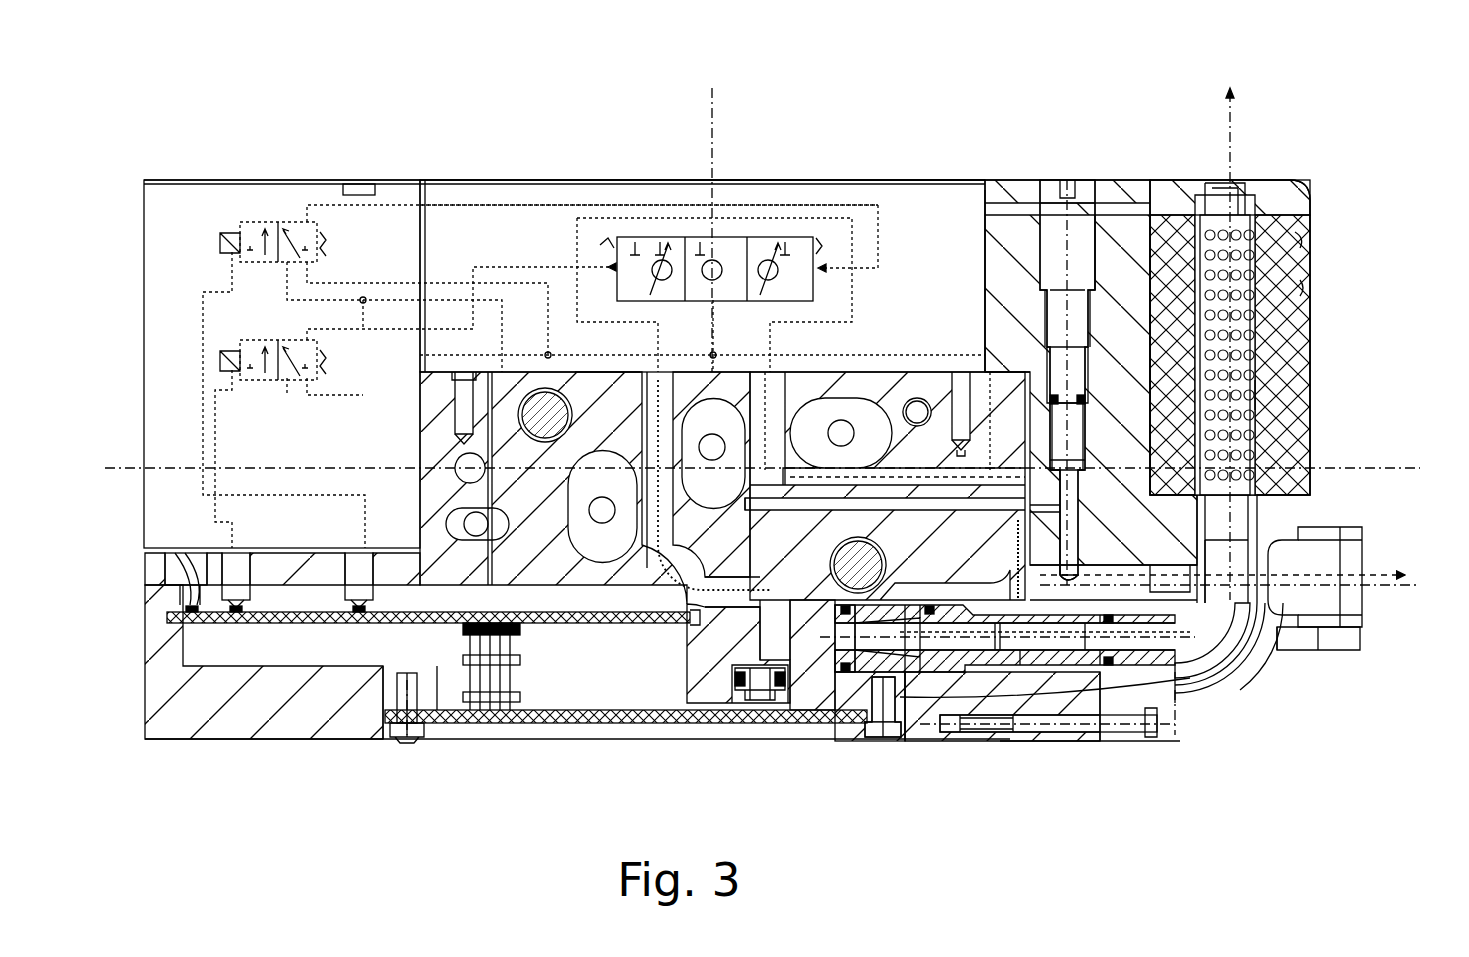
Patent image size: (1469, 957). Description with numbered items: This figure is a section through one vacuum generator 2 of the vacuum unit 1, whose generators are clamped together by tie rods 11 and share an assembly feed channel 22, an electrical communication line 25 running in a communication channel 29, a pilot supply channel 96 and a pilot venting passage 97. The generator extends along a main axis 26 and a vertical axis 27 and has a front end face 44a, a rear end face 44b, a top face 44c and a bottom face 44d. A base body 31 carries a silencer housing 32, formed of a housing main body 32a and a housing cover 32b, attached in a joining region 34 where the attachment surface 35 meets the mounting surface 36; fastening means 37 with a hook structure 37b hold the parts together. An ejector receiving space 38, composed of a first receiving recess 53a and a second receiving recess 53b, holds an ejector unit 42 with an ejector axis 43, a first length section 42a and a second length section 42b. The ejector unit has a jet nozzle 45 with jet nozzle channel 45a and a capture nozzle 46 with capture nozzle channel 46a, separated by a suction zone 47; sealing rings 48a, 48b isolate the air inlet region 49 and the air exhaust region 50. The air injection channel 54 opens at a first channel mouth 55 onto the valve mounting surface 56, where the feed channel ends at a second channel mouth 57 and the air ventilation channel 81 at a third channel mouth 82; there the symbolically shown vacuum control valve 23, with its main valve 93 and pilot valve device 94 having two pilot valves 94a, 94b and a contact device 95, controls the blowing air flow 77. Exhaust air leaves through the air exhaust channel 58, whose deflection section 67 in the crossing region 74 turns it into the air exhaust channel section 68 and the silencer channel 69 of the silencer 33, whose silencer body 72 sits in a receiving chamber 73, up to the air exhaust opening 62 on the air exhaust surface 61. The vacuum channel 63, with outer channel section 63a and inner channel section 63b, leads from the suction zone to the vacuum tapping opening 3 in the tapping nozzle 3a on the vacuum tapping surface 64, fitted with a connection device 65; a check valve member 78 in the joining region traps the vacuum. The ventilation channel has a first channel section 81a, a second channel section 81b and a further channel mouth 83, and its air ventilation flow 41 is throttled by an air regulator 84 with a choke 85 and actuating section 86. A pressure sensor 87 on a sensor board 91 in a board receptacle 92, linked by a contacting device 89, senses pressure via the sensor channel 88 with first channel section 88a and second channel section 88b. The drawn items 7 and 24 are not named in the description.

The vacuum unit 1 is at (333, 98).
The vacuum generator 2 is at (590, 138).
The vacuum tapping opening 3 is at (1372, 616).
The tapping nozzle 3a is at (1337, 642).
The outlet fitting 7 is at (1357, 600).
The tie rods 11 is at (545, 415).
The assembly feed channel 22 is at (660, 600).
The vacuum control valve 23 is at (768, 193).
The return passage 24 is at (841, 398).
The electrical communication line 25 is at (285, 740).
The main axis 26 is at (118, 462).
The vertical axis 27 is at (712, 88).
The communication channel 29 is at (332, 680).
The base body 31 is at (560, 640).
The silencer housing 32 is at (1322, 358).
The housing main body 32a is at (1140, 236).
The housing cover 32b is at (1182, 232).
The silencer 33 is at (1286, 318).
The joining region 34 is at (1023, 743).
The attachment surface 35 is at (1068, 382).
The mounting surface 36 is at (992, 370).
The fastening means 37 is at (1080, 740).
The hook structure 37b is at (1000, 370).
The ejector receiving space 38 is at (1002, 652).
The air ventilation flow 41 is at (1398, 574).
The ejector unit 42 is at (926, 674).
The first length section 42a is at (936, 700).
The second length section 42b is at (1178, 706).
The longitudinal ejector axis 43 is at (1182, 642).
The front end face 44a is at (1325, 215).
The rear end face 44b is at (140, 638).
The top face 44c is at (836, 172).
The bottom face 44d is at (357, 744).
The jet nozzle 45 is at (846, 674).
The jet nozzle channel 45a is at (870, 676).
The capture nozzle 46 is at (1042, 674).
The capture nozzle channel 46a is at (1017, 700).
The suction zone 47 is at (895, 652).
The sealing ring 48a is at (846, 676).
The sealing ring 48b is at (1110, 674).
The air inlet region 49 is at (905, 630).
The air exhaust region 50 is at (1212, 672).
The first receiving recess 53a is at (977, 674).
The second receiving recess 53b is at (1087, 674).
The air injection channel 54 is at (732, 600).
The first channel mouth 55 is at (648, 382).
The valve mounting surface 56 is at (573, 368).
The second channel mouth 57 is at (710, 372).
The air exhaust channel 58 is at (1237, 522).
The air exhaust surface 61 is at (1272, 170).
The air exhaust opening 62 is at (1228, 200).
The vacuum channel 63 is at (1215, 632).
The outer channel section 63a is at (1142, 575).
The inner channel section 63b is at (915, 604).
The vacuum tapping surface 64 is at (1322, 426).
The connection device 65 is at (1322, 642).
The deflection section 67 is at (1242, 662).
The air exhaust channel section 68 is at (1247, 550).
The silencer channel 69 is at (1272, 396).
The silencer body 72 is at (1285, 238).
The receiving chamber 73 is at (1302, 288).
The crossing region 74 is at (1272, 657).
The blowing air flow 77 is at (1233, 100).
The check valve member 78 is at (1025, 568).
The air ventilation channel 81 is at (1002, 370).
The first channel section 81a is at (905, 462).
The second channel section 81b is at (1072, 502).
The third channel mouth 82 is at (765, 372).
The further channel mouth 83 is at (1070, 566).
The air regulator 84 is at (1072, 462).
The choke 85 is at (1092, 215).
The actuating section 86 is at (1057, 195).
The pressure sensor 87 is at (760, 703).
The sensor channel 88 is at (795, 620).
The first channel section 88a is at (912, 505).
The second channel section 88b is at (1042, 508).
The contacting device 89 is at (490, 690).
The sensor board 91 is at (445, 724).
The board receptacle 92 is at (410, 739).
The main valve 93 is at (447, 195).
The pilot valve device 94 is at (218, 190).
The pilot valve 94a is at (216, 242).
The pilot valve 94b is at (216, 360).
The contact device 95 is at (292, 620).
The pilot supply channel 96 is at (957, 386).
The pilot venting passage 97 is at (447, 524).